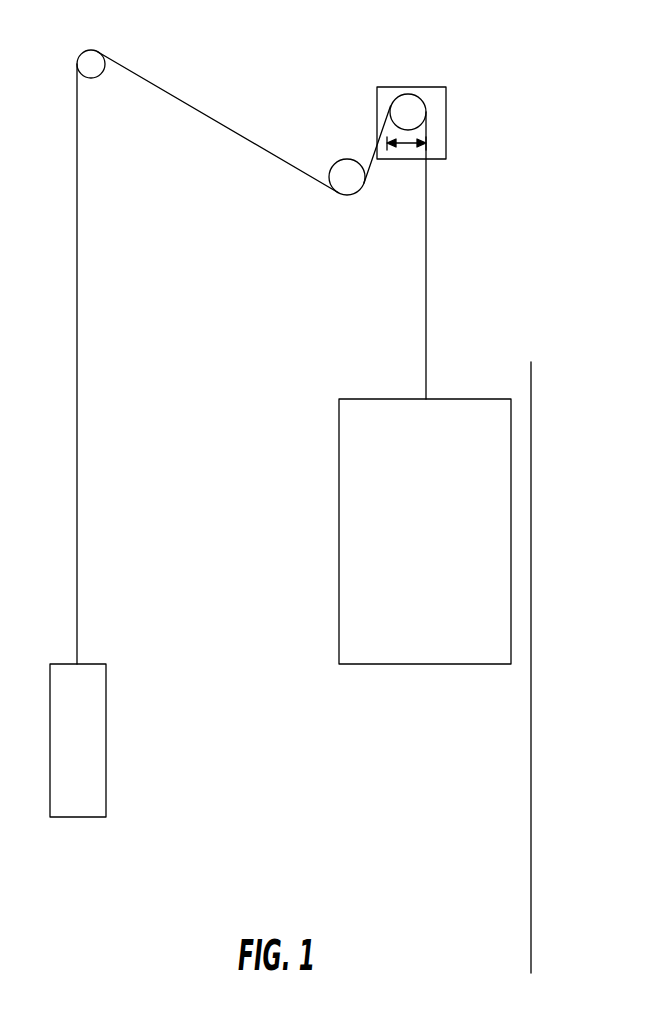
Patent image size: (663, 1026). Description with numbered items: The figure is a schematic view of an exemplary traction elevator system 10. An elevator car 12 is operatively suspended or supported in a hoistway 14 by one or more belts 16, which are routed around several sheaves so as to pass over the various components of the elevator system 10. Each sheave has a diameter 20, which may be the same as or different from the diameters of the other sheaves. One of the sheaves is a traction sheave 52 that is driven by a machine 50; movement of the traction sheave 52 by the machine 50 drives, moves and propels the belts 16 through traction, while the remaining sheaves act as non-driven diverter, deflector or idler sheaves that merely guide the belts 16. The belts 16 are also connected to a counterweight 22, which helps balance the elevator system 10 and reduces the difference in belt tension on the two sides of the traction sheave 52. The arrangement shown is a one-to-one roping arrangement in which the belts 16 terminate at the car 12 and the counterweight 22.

The traction elevator system 10 is at (549, 52).
The elevator car 12 is at (460, 399).
The hoistway 14 is at (532, 583).
The belt 16 is at (240, 137).
The diameter 20 is at (405, 150).
The counterweight 22 is at (62, 663).
The machine 50 is at (393, 87).
The traction sheave 52 is at (415, 95).